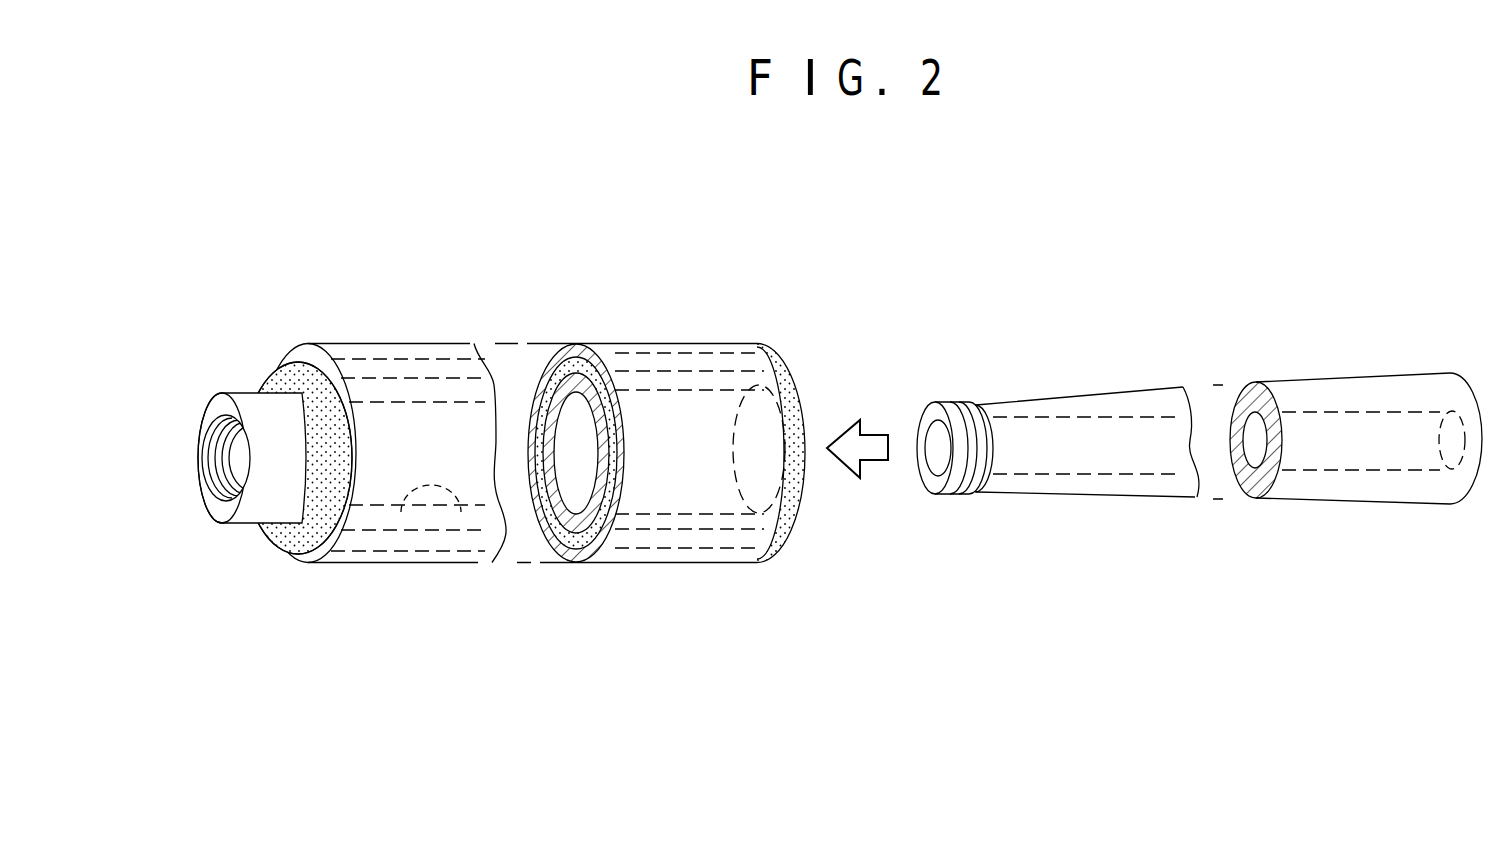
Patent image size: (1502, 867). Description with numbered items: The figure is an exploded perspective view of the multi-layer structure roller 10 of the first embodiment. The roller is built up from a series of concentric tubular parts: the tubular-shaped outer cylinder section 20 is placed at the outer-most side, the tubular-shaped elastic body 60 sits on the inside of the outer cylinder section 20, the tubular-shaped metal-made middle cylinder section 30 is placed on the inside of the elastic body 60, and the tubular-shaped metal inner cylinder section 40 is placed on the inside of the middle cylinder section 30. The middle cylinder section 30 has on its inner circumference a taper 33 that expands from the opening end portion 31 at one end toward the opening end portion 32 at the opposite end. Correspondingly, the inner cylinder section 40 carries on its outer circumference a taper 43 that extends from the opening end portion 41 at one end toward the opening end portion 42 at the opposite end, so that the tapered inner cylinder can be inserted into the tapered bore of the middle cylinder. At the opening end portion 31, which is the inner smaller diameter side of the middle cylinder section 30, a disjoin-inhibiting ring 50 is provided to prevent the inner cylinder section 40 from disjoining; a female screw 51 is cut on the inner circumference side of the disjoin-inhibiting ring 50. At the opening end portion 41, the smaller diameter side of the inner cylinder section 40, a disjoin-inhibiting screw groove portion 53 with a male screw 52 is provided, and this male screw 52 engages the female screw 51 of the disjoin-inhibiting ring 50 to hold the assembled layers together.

The multi-layer structure roller 10 is at (503, 420).
The outer cylinder section 20 is at (503, 437).
The middle cylinder section 30 is at (553, 352).
The opening end portion 31 is at (276, 360).
The opening end portion 32 is at (790, 378).
The taper 33 is at (460, 519).
The inner cylinder section 40 is at (1360, 346).
The opening end portion 41 is at (930, 402).
The opening end portion 42 is at (1470, 368).
The taper 43 is at (1123, 390).
The disjoin-inhibiting ring 50 is at (243, 392).
The female screw 51 is at (218, 442).
The male screw 52 is at (966, 457).
The disjoin-inhibiting screw groove portion 53 is at (962, 492).
The elastic body 60 is at (534, 430).